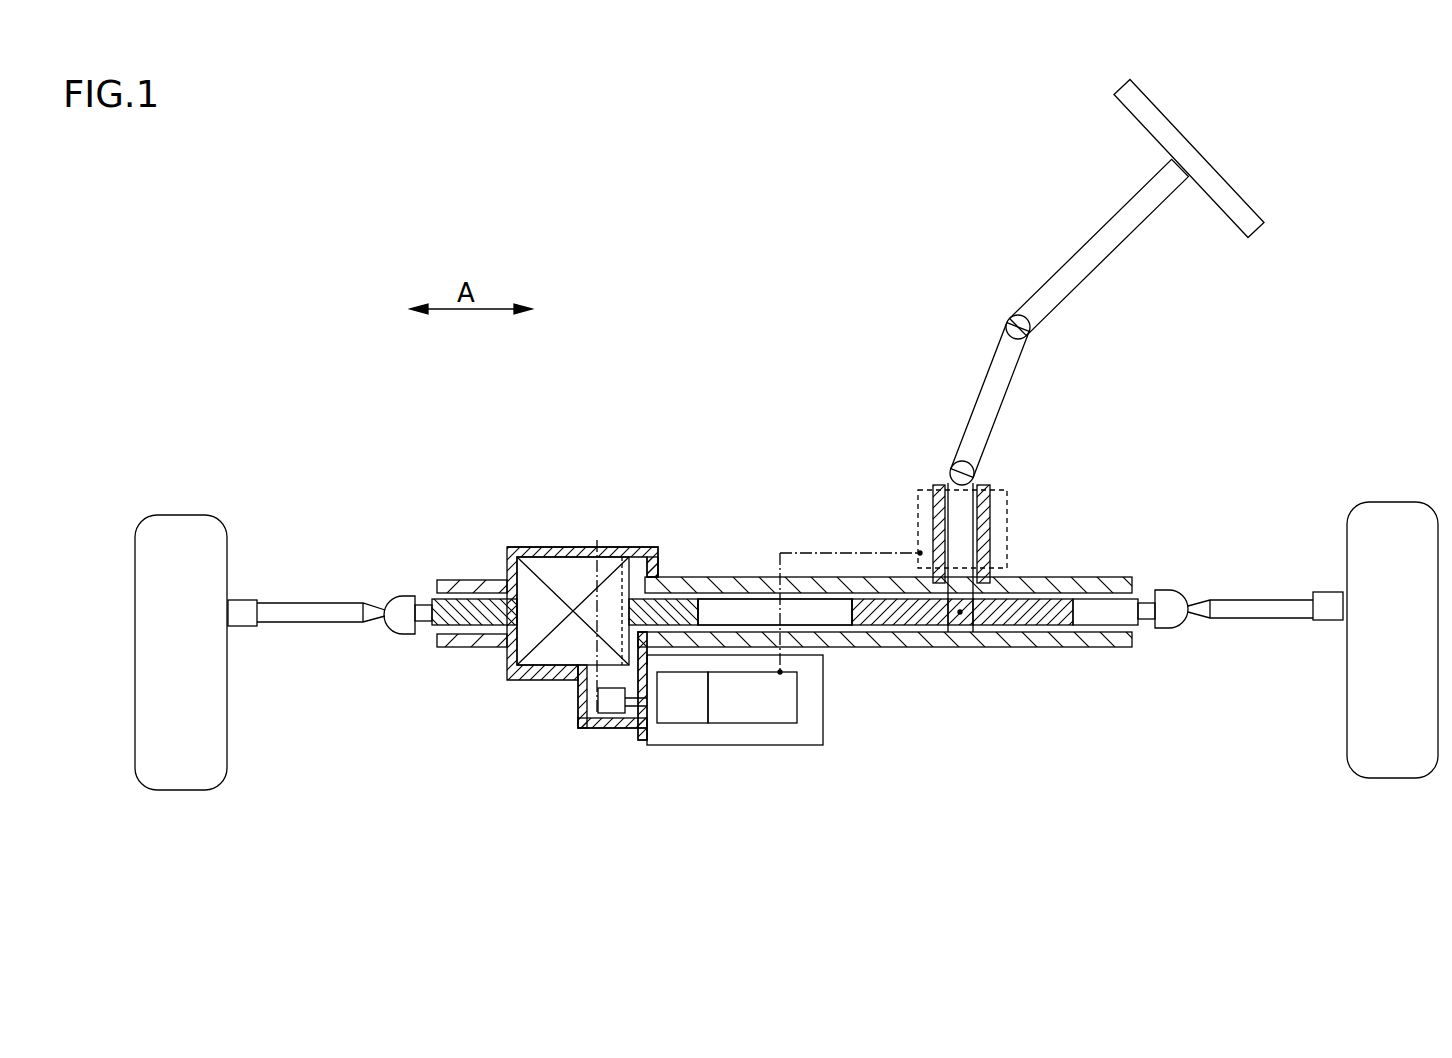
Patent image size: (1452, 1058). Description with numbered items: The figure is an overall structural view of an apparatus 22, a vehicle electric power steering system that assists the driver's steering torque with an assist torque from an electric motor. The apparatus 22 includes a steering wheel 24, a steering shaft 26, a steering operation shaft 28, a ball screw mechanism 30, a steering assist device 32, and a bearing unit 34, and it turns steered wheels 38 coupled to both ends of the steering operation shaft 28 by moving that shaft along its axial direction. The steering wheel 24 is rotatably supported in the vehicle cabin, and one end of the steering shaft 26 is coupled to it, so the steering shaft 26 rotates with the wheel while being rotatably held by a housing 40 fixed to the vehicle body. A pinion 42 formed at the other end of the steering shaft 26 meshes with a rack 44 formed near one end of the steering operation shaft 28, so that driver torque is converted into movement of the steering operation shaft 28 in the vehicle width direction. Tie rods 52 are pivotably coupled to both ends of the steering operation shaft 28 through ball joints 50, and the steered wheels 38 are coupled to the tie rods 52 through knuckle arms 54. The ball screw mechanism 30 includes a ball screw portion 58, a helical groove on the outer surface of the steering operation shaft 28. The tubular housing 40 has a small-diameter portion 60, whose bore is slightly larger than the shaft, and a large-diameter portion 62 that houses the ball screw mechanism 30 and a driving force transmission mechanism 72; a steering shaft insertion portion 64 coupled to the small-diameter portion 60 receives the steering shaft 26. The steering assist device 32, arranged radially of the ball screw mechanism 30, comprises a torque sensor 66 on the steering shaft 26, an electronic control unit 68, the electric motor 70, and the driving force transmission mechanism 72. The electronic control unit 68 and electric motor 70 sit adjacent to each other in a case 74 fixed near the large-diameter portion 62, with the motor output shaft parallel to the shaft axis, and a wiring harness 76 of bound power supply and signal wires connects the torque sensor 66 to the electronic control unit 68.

The apparatus 22 is at (766, 512).
The steering wheel 24 is at (1222, 178).
The steering shaft 26 is at (935, 506).
The steering operation shaft 28 is at (1100, 612).
The ball screw mechanism 30 is at (552, 665).
The steering assist device 32 is at (627, 745).
The bearing unit 34 is at (540, 667).
The steered wheels 38 is at (188, 530).
The housing 40 is at (627, 540).
The pinion 42 is at (963, 614).
The rack 44 is at (903, 622).
The ball joints 50 is at (403, 624).
The tie rods 52 is at (316, 618).
The knuckle arms 54 is at (247, 622).
The ball screw portion 58 is at (670, 588).
The small-diameter portion 60 is at (712, 577).
The large-diameter portion 62 is at (548, 547).
The steering shaft insertion portion 64 is at (990, 545).
The torque sensor 66 is at (1007, 490).
The electronic control unit 68 is at (750, 725).
The electric motor 70 is at (687, 725).
The driving force transmission mechanism 72 is at (613, 686).
The case 74 is at (785, 747).
The wiring harness 76 is at (815, 553).